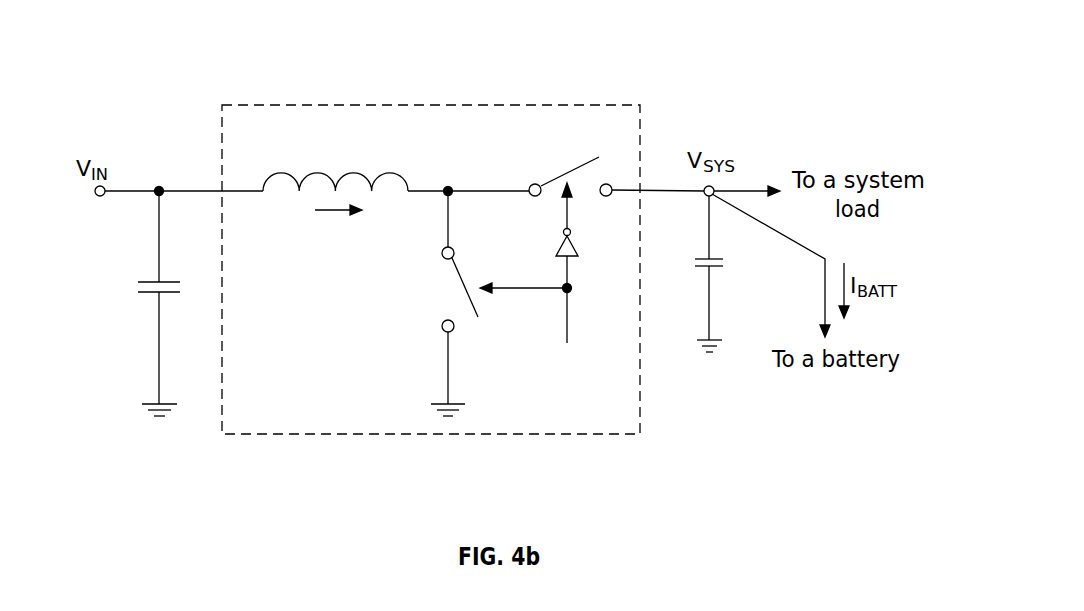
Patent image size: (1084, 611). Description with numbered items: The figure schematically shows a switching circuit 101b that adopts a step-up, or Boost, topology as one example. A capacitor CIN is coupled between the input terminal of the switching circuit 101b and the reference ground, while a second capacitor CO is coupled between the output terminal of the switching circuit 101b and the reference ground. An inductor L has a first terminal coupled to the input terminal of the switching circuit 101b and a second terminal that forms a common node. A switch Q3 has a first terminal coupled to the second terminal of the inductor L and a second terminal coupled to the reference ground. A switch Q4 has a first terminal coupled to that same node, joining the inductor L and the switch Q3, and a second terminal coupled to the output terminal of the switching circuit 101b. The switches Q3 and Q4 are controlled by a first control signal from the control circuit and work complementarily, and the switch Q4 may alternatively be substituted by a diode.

The switching circuit 101b is at (582, 105).
The inductor L is at (335, 162).
The switch Q3 is at (437, 303).
The switch Q4 is at (570, 164).
The capacitor CIN is at (139, 305).
The capacitor CO is at (727, 274).